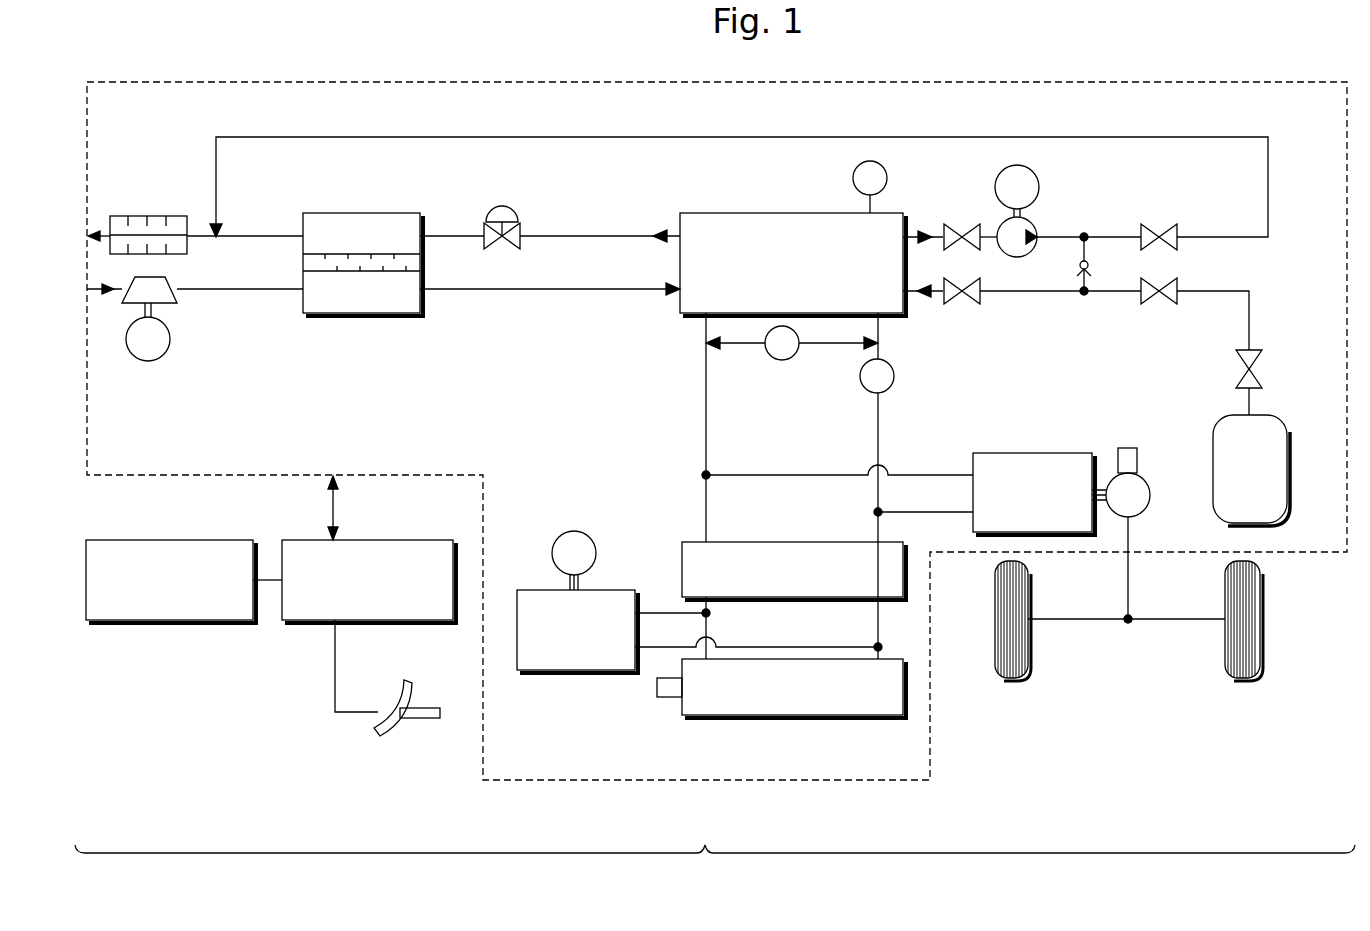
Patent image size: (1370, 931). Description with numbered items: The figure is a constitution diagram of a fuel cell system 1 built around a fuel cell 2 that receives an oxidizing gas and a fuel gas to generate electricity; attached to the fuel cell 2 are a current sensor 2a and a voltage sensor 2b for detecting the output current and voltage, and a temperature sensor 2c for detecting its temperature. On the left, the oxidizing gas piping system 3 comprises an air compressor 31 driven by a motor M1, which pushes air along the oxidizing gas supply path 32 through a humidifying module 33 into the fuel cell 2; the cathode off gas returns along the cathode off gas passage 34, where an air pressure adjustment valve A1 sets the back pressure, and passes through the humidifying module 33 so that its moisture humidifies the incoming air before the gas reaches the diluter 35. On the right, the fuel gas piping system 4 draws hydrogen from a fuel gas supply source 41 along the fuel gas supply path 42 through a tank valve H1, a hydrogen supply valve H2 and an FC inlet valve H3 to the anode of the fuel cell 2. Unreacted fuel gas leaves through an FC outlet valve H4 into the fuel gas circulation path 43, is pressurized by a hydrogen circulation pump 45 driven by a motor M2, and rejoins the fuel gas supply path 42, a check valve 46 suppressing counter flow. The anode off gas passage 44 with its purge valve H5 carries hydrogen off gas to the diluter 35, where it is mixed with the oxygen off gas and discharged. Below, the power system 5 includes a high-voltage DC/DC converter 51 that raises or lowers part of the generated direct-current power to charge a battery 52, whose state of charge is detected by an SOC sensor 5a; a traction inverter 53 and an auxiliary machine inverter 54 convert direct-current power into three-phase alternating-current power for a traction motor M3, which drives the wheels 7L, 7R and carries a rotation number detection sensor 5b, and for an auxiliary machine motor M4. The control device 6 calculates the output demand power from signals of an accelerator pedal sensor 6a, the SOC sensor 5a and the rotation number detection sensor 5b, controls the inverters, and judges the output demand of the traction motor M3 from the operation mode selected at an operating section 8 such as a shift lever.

The fuel cell system 1 is at (715, 872).
The fuel cell 2 is at (733, 213).
The current sensor 2a is at (891, 385).
The voltage sensor 2b is at (772, 358).
The temperature sensor 2c is at (853, 180).
The oxidizing gas piping system 3 is at (368, 310).
The air compressor 31 is at (176, 319).
The oxidizing gas supply path 32 is at (468, 292).
The humidifying module 33 is at (390, 314).
The cathode off gas passage 34 is at (588, 234).
The diluter 35 is at (140, 216).
The fuel gas piping system 4 is at (753, 331).
The fuel gas supply source 41 is at (1213, 460).
The fuel gas supply path 42 is at (1066, 293).
The fuel gas circulation path 43 is at (1068, 238).
The anode off gas passage 44 is at (1215, 237).
The hydrogen circulation pump 45 is at (1046, 211).
The check valve 46 is at (1090, 265).
The power system 5 is at (824, 542).
The SOC sensor 5a is at (665, 698).
The rotation number detection sensor 5b is at (1127, 448).
The high-voltage DC/DC converter 51 is at (765, 542).
The battery 52 is at (780, 716).
The traction inverter 53 is at (1010, 453).
The auxiliary machine inverter 54 is at (688, 602).
The control device 6 is at (325, 621).
The accelerator pedal sensor 6a is at (396, 691).
The wheel 7L is at (1010, 679).
The wheel 7R is at (1242, 679).
The operating section 8 is at (118, 621).
The air pressure adjustment valve A1 is at (503, 198).
The tank valve H1 is at (1266, 382).
The hydrogen supply valve H2 is at (1160, 305).
The FC inlet valve H3 is at (962, 305).
The FC outlet valve H4 is at (962, 224).
The purge valve H5 is at (1159, 224).
The motor M1 is at (148, 339).
The motor M2 is at (1017, 187).
The traction motor M3 is at (1128, 495).
The auxiliary machine motor M4 is at (574, 553).